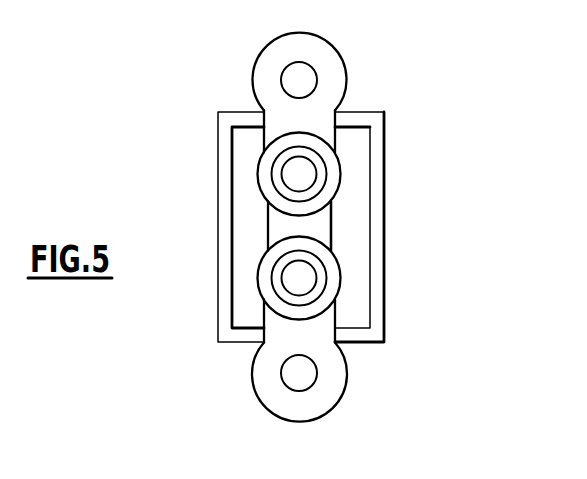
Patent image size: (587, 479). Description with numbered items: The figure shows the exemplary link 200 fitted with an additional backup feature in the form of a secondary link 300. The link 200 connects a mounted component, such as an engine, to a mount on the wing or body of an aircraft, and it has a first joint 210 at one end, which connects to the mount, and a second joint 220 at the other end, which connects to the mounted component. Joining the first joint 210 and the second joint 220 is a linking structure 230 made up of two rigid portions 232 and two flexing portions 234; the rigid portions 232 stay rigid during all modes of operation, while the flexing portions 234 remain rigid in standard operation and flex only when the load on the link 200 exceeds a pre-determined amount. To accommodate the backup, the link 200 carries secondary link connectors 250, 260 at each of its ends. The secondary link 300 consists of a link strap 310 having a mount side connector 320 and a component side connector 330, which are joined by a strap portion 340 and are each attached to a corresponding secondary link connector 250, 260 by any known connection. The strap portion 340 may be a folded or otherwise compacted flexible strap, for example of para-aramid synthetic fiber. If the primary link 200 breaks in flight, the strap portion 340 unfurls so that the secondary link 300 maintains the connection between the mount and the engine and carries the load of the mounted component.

The link 200 is at (438, 54).
The first joint 210 is at (330, 68).
The second joint 220 is at (328, 392).
The linking structure 230 is at (378, 237).
The rigid portion 232 is at (384, 183).
The flexing portion 234 is at (360, 118).
The secondary link connector 250 is at (328, 135).
The secondary link connector 260 is at (326, 323).
The secondary link 300 is at (268, 221).
The link strap 310 is at (322, 236).
The mount side connector 320 is at (272, 168).
The component side connector 330 is at (269, 284).
The strap portion 340 is at (330, 227).